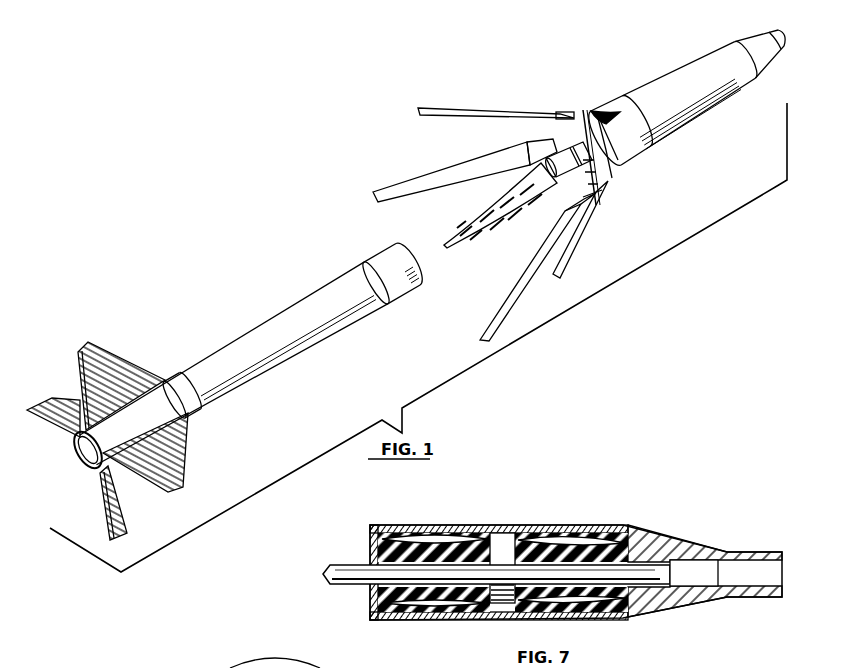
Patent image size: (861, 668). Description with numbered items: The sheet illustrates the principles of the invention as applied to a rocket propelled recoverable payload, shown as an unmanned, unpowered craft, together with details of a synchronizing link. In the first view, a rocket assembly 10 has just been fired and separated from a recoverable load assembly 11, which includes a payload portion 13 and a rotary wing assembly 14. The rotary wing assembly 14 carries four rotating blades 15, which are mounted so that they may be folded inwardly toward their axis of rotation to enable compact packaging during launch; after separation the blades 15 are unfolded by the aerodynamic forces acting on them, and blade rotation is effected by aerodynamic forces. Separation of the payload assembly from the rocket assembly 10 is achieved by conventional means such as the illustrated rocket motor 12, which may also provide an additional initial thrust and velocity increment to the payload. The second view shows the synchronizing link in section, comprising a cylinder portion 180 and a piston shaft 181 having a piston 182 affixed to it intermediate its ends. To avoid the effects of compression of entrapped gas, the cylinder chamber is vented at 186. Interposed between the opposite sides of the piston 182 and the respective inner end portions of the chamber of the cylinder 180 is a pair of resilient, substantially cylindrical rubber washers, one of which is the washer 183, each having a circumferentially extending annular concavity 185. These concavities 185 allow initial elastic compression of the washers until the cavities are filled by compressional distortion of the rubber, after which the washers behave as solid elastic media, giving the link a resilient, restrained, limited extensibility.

In FIG. 1, the rocket assembly 10 is at (245, 312).
In FIG. 1, the recoverable load assembly 11 is at (579, 182).
In FIG. 1, the rocket motor 12 is at (564, 183).
In FIG. 1, the payload portion 13 is at (700, 118).
In FIG. 1, the rotary wing assembly 14 is at (622, 190).
In FIG. 1, the rotating blades 15 is at (590, 212).
In FIG. 7, the cylinder portion 180 is at (687, 597).
In FIG. 7, the piston shaft 181 is at (347, 586).
In FIG. 7, the piston 182 is at (502, 568).
In FIG. 7, the rubber washer 183 is at (462, 545).
In FIG. 7, the annular concavity 185 is at (443, 606).
In FIG. 7, the vent 186 is at (707, 557).